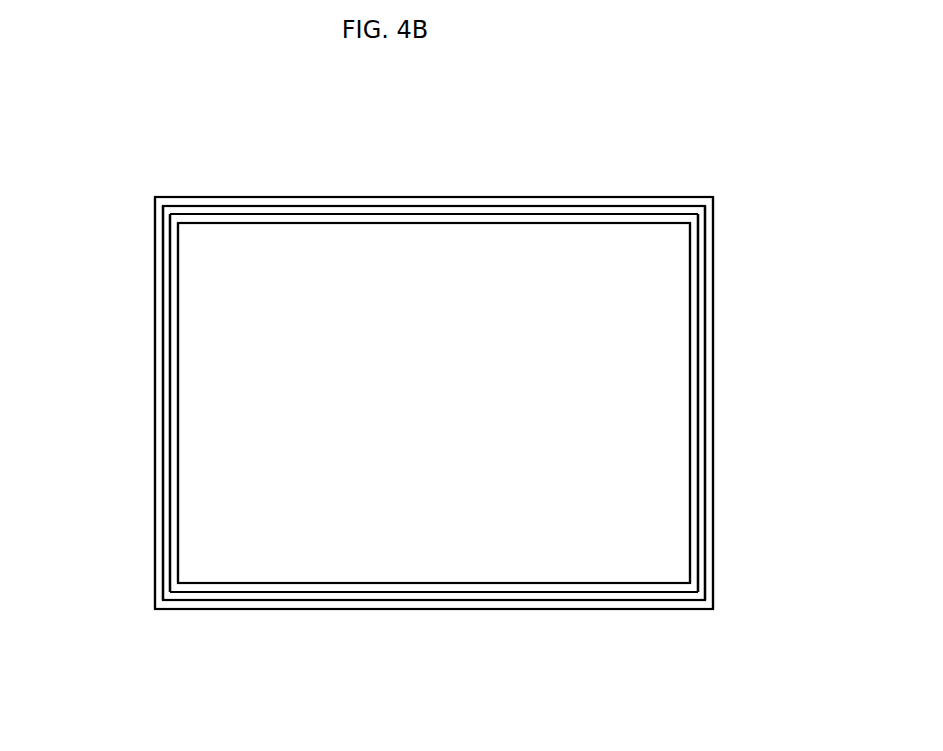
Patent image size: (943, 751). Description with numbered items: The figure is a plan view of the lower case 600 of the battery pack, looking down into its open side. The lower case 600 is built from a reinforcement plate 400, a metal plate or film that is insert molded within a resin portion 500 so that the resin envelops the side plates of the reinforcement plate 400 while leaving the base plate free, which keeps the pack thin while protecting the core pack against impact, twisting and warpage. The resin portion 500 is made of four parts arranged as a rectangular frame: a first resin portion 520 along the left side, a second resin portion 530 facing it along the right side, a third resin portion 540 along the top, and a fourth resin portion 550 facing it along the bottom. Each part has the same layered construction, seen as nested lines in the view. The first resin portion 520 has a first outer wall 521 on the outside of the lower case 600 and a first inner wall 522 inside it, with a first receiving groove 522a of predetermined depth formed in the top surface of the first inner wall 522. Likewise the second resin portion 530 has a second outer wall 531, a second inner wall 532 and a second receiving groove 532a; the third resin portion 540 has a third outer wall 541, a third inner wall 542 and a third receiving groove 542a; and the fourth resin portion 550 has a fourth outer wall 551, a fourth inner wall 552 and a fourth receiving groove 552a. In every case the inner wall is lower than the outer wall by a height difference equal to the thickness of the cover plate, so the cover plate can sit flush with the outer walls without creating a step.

The reinforcement plate 400 is at (596, 256).
The resin portion 500 is at (141, 255).
The first resin portion 520 is at (63, 337).
The first outer wall 521 is at (157, 337).
The first inner wall 522 is at (172, 385).
The first receiving groove 522a is at (165, 432).
The second resin portion 530 is at (802, 340).
The second outer wall 531 is at (710, 340).
The second inner wall 532 is at (694, 388).
The second receiving groove 532a is at (703, 435).
The third resin portion 540 is at (512, 122).
The third outer wall 541 is at (370, 203).
The third inner wall 542 is at (509, 220).
The third receiving groove 542a is at (437, 212).
The fourth resin portion 550 is at (368, 683).
The fourth outer wall 551 is at (367, 605).
The fourth inner wall 552 is at (507, 587).
The fourth receiving groove 552a is at (435, 597).
The lower case 600 is at (204, 165).